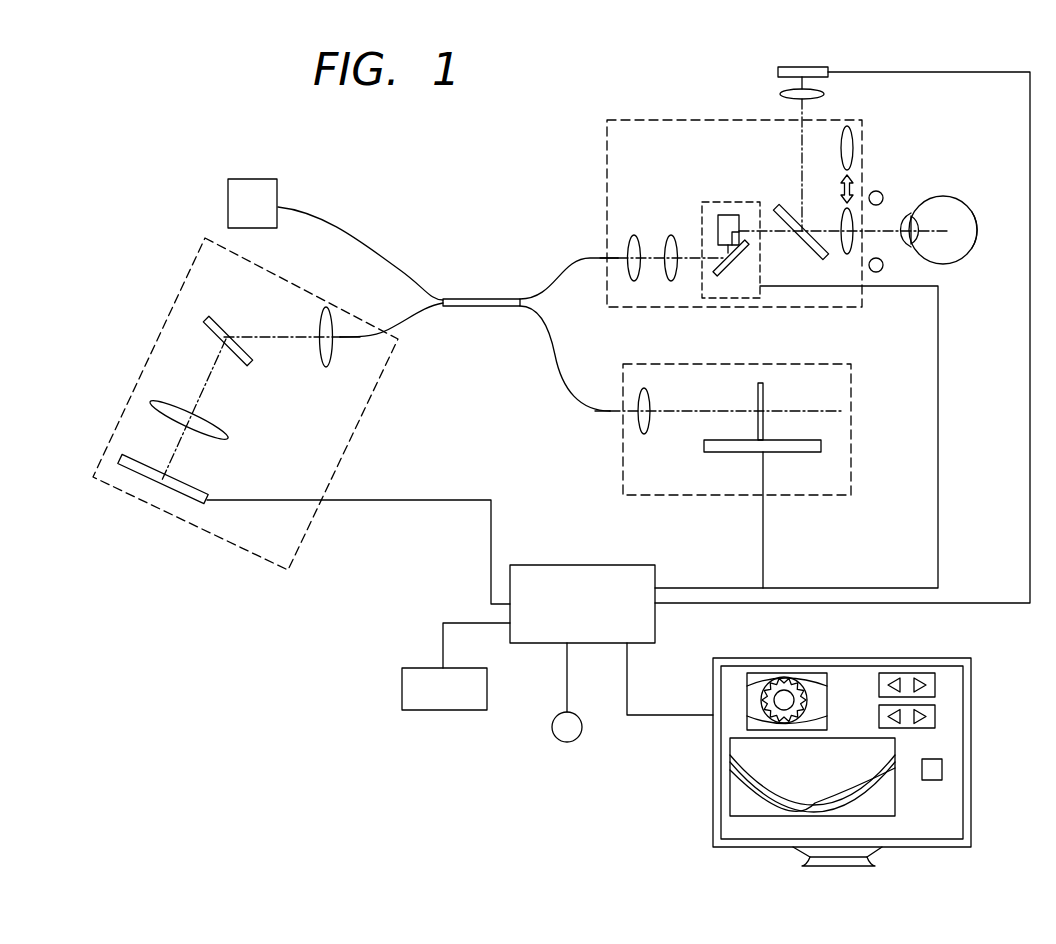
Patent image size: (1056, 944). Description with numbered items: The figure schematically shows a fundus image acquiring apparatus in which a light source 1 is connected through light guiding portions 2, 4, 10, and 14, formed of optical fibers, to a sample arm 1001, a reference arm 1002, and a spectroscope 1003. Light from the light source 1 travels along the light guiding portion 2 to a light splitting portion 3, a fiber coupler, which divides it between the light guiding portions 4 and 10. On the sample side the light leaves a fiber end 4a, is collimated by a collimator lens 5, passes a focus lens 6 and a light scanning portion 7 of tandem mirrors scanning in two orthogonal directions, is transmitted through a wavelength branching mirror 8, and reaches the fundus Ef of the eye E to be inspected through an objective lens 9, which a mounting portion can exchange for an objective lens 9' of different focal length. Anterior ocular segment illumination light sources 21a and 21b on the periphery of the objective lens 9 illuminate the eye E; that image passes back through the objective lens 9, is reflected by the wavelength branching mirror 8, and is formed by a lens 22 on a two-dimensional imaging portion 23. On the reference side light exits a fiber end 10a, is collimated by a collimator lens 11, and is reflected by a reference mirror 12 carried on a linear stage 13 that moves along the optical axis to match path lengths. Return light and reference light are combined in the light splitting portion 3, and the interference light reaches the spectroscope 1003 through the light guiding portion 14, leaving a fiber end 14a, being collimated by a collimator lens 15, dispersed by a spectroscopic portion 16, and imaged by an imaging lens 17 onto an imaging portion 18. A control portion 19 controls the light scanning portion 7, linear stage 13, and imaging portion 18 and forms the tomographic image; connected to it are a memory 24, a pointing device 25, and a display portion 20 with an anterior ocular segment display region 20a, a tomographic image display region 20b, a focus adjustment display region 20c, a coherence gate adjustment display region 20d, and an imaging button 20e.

The light source 1 is at (256, 178).
The light guiding portion 2 is at (338, 226).
The light splitting portion 3 is at (480, 298).
The light guiding portion 4 is at (551, 282).
The fiber end 4a is at (612, 257).
The collimator lens 5 is at (633, 236).
The focus lens 6 is at (670, 236).
The light scanning portion 7 is at (725, 201).
The wavelength branching mirror 8 is at (810, 247).
The objective lens 9 is at (832, 226).
The objective lens 9' is at (829, 163).
The light guiding portion 10 is at (553, 352).
The fiber end 10a is at (609, 413).
The collimator lens 11 is at (644, 434).
The reference mirror 12 is at (765, 390).
The linear stage 13 is at (792, 453).
The light guiding portion 14 is at (417, 307).
The fiber end 14a is at (343, 339).
The collimator lens 15 is at (325, 368).
The spectroscopic portion 16 is at (250, 364).
The imaging lens 17 is at (227, 437).
The imaging portion 18 is at (183, 502).
The control portion 19 is at (657, 627).
The display portion 20 is at (712, 749).
The anterior ocular segment display region 20a is at (817, 672).
The tomographic image display region 20b is at (730, 792).
The focus adjustment display region 20c is at (925, 672).
The coherence gate adjustment display region 20d is at (937, 712).
The imaging button 20e is at (943, 768).
The anterior ocular segment illumination light source 21a is at (880, 191).
The anterior ocular segment illumination light source 21b is at (880, 273).
The lens 22 is at (779, 95).
The two-dimensional imaging portion 23 is at (778, 70).
The memory 24 is at (453, 712).
The pointing device 25 is at (565, 743).
The sample arm 1001 is at (630, 119).
The reference arm 1002 is at (703, 497).
The spectroscope 1003 is at (133, 497).
The eye to be inspected E is at (930, 196).
The fundus Ef is at (979, 220).